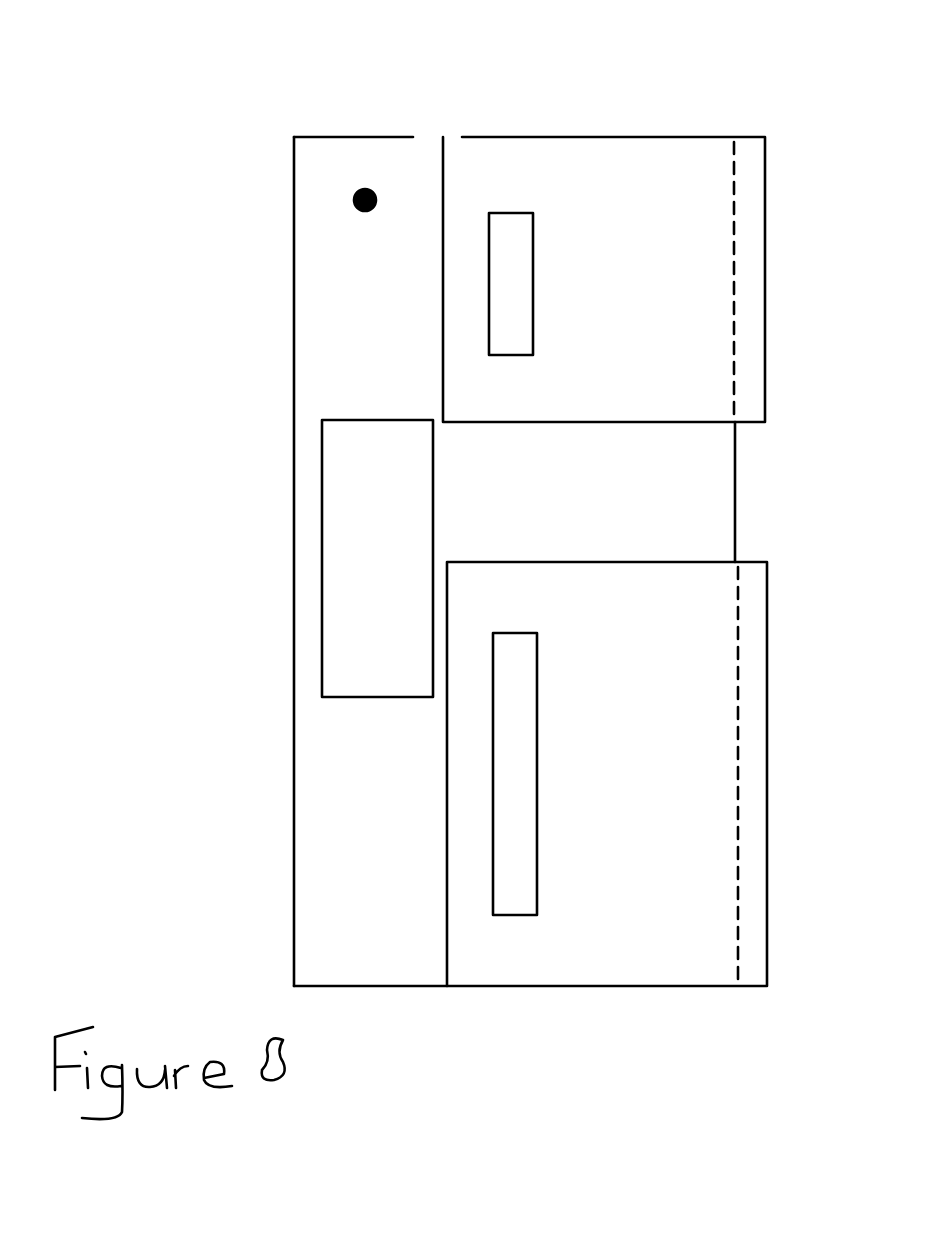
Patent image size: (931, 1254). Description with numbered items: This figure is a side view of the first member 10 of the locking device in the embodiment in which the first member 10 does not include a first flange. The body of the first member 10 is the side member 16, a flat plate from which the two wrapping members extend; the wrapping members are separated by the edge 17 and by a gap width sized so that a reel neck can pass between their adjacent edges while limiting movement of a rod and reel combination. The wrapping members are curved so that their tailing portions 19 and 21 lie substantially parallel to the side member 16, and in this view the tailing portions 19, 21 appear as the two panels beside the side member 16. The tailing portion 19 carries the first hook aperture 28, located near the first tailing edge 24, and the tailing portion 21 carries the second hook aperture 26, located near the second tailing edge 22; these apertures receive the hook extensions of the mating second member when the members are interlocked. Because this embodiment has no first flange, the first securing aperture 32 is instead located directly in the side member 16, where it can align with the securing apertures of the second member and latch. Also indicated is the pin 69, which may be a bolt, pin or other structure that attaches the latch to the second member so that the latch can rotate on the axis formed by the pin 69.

The first member 10 is at (209, 61).
The side member 16 is at (330, 561).
The edge 17 is at (797, 492).
The tailing portion 19 is at (684, 310).
The tailing portion 21 is at (682, 811).
The second tailing edge 22 is at (580, 774).
The first tailing edge 24 is at (576, 279).
The second hook aperture 26 is at (545, 774).
The first hook aperture 28 is at (553, 284).
The first securing aperture 32 is at (299, 558).
The pin 69 is at (384, 142).